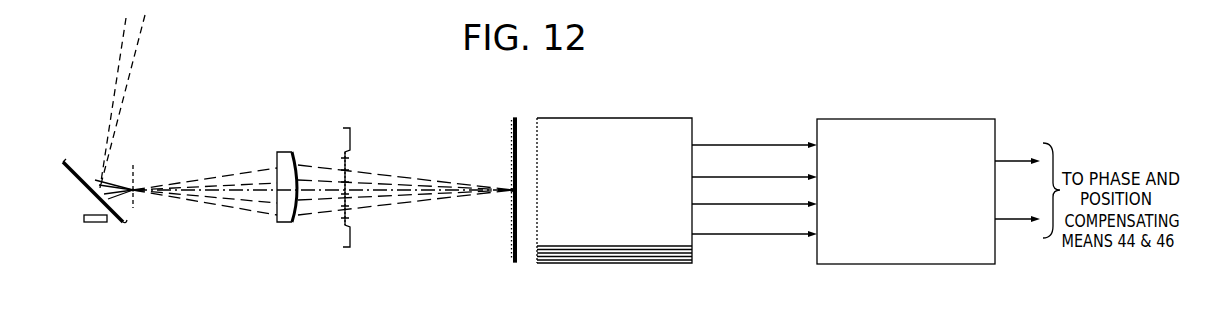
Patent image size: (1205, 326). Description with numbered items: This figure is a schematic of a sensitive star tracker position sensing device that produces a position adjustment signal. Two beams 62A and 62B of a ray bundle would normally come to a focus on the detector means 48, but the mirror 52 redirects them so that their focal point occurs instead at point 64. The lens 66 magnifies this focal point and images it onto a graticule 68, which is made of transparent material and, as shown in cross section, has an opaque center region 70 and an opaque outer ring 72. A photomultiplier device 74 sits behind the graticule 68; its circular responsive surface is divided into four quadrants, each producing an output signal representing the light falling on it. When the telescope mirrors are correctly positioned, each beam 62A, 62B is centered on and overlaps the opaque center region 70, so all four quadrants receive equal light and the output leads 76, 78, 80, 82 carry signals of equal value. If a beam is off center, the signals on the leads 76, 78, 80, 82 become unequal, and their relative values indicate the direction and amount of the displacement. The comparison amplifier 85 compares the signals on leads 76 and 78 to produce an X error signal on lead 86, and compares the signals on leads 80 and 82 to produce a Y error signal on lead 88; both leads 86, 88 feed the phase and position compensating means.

The detector means 48 is at (84, 218).
The mirror 52 is at (80, 183).
The beam 62A is at (76, 67).
The beam 62B is at (118, 76).
The point 64 is at (137, 168).
The lens 66 is at (283, 230).
The graticule 68 is at (483, 230).
The opaque center region 70 is at (510, 186).
The opaque outer ring 72 is at (512, 122).
The photomultiplier device 74 is at (628, 252).
The output lead 76 is at (760, 143).
The output lead 78 is at (760, 175).
The output lead 80 is at (760, 202).
The output lead 82 is at (760, 232).
The amplifier 85 is at (949, 118).
The lead 86 is at (1020, 158).
The lead 88 is at (1020, 222).